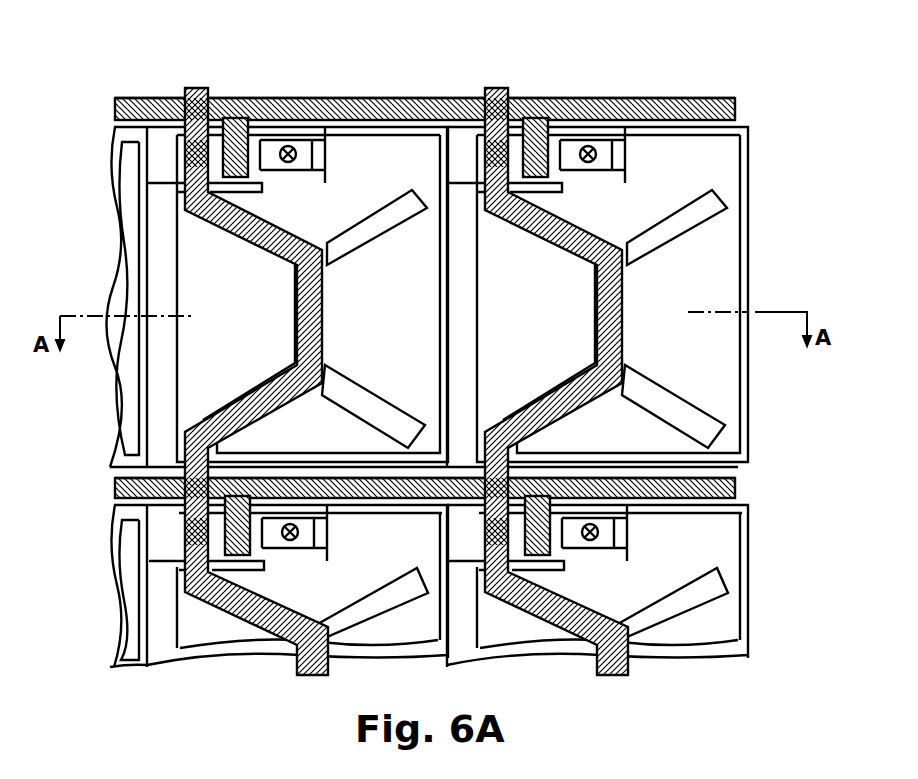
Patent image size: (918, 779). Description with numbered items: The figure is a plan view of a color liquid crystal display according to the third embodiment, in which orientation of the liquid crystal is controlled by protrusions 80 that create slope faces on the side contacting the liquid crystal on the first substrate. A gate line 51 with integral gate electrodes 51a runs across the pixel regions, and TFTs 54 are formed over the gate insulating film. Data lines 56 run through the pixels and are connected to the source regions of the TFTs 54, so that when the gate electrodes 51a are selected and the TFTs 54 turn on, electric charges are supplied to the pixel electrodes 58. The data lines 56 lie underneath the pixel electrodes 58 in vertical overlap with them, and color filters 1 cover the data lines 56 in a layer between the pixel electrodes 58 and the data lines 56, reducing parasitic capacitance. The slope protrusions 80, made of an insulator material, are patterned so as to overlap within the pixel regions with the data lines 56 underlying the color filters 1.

The color filter 1 is at (167, 385).
The gate line 51 is at (735, 105).
The gate electrode 51a is at (233, 116).
The TFT 54 is at (270, 97).
The data line 56 is at (201, 88).
The pixel electrode 58 is at (718, 395).
The protrusion 80 is at (678, 240).